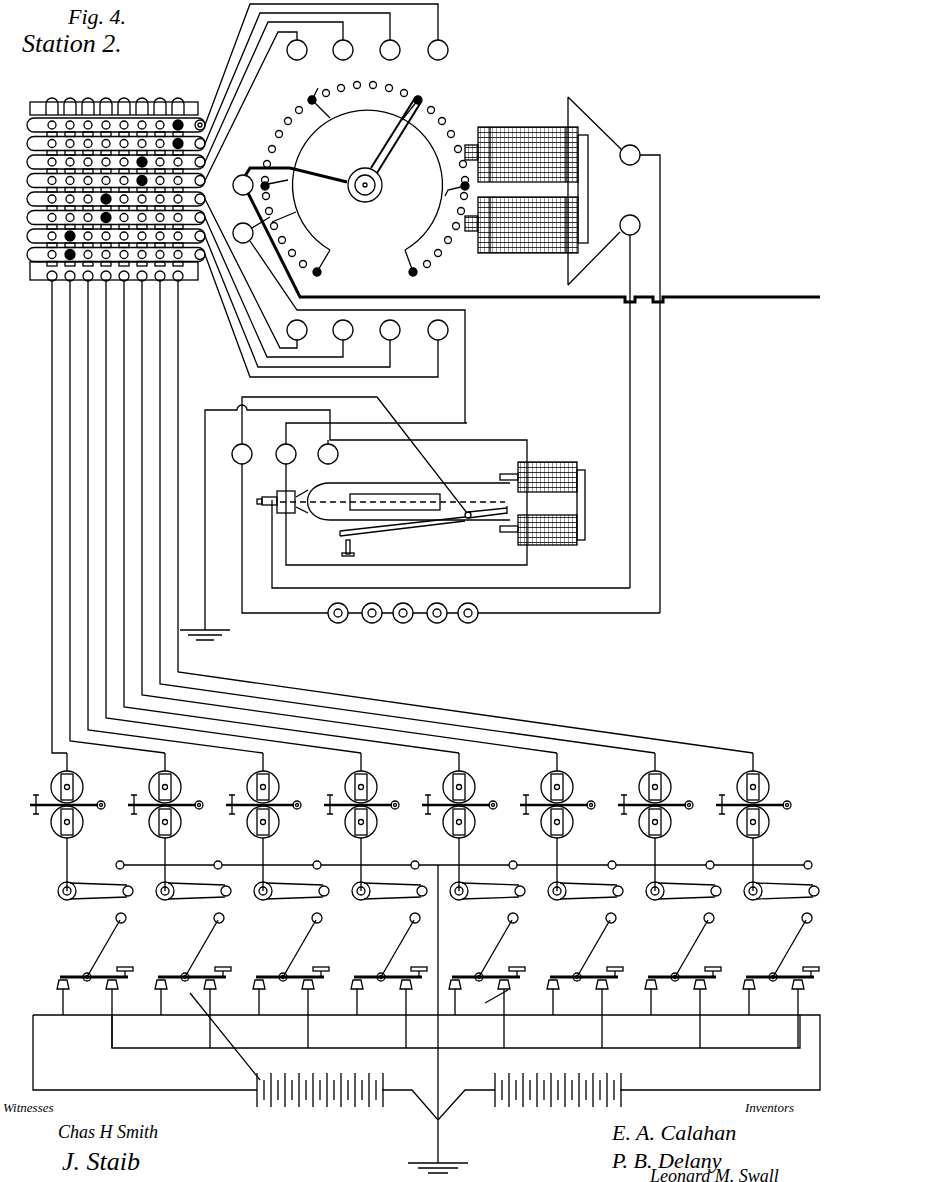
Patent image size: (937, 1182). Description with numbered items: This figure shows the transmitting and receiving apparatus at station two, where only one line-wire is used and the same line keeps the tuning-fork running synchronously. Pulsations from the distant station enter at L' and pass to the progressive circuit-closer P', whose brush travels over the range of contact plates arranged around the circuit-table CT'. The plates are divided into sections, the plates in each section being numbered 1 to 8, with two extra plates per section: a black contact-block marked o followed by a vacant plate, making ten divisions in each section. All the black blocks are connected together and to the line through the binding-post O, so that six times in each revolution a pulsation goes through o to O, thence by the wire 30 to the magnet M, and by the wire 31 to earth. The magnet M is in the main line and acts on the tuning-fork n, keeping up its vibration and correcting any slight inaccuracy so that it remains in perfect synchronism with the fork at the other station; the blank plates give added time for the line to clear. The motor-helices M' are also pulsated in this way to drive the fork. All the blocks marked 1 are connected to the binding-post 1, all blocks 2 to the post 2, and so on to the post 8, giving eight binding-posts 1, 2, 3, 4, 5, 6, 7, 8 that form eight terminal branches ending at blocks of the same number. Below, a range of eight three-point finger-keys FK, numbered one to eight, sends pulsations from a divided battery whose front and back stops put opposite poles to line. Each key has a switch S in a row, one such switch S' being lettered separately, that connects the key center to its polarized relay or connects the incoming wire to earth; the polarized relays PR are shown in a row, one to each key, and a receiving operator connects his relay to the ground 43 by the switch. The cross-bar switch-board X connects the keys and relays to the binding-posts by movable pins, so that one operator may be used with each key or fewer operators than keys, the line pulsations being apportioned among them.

The cross-bar switch-board X is at (116, 178).
The binding-post 1 is at (438, 50).
The binding-post 2 is at (390, 50).
The binding-post 3 is at (343, 50).
The binding-post 4 is at (297, 50).
The binding-post 5 is at (297, 330).
The binding-post 6 is at (343, 330).
The binding-post 7 is at (390, 330).
The binding-post 8 is at (438, 330).
The circuit-table CT' is at (370, 186).
The progressive circuit-closer P' is at (384, 150).
The line terminal L' is at (516, 235).
The binding-post O is at (342, 319).
The motor-helices M' is at (569, 355).
The wire 30 is at (364, 440).
The wire 31 is at (353, 522).
The tuning-fork n is at (383, 511).
The magnet M is at (542, 503).
The polarized relays PR is at (130, 798).
The switch S is at (438, 891).
The switch S' is at (585, 891).
The ground 43 is at (446, 992).
The finger-keys FK is at (438, 996).